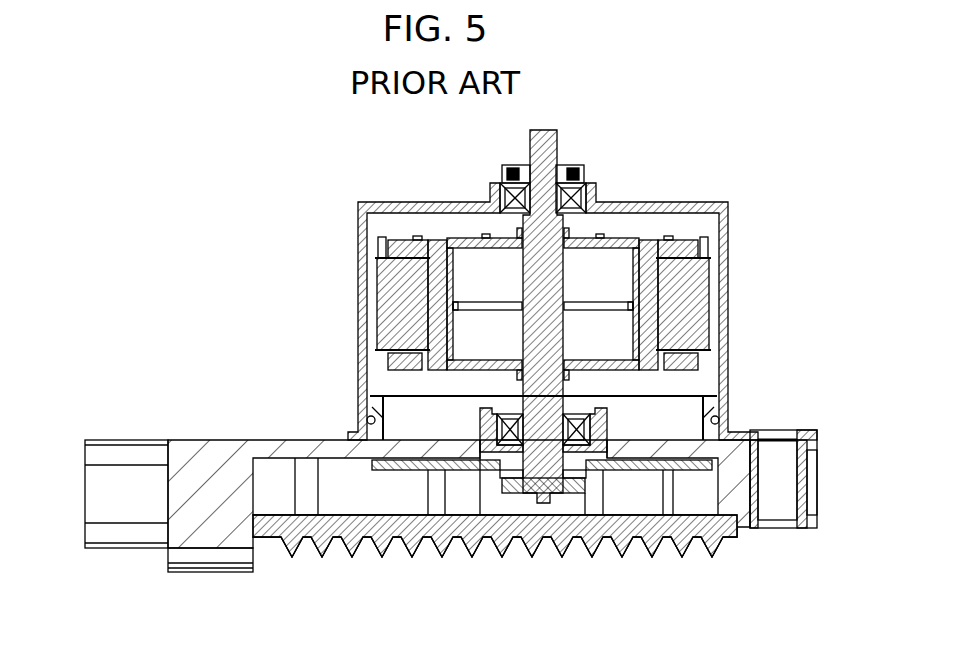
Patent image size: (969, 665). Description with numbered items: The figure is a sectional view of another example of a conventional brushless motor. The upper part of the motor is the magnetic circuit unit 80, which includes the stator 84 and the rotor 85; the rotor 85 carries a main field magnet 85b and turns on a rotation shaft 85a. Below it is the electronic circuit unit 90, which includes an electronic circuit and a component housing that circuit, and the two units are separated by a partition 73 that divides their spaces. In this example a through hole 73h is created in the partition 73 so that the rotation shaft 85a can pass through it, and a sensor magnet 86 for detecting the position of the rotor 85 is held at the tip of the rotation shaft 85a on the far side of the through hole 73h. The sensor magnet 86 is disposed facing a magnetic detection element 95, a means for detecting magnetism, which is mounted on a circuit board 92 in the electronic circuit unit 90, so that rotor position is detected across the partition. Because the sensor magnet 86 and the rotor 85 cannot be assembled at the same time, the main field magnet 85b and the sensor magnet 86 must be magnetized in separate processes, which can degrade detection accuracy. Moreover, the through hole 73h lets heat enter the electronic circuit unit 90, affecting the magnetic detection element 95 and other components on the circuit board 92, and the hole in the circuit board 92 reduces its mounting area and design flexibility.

The magnetic circuit unit 80 is at (82, 95).
The electronic circuit unit 90 is at (82, 442).
The partition 73 is at (398, 448).
The through hole 73h is at (520, 455).
The stator 84 is at (387, 293).
The rotor 85 is at (437, 252).
The rotation shaft 85a is at (540, 153).
The main field magnet 85b is at (645, 250).
The sensor magnet 86 is at (563, 493).
The magnetic detection element 95 is at (583, 470).
The circuit board 92 is at (703, 470).